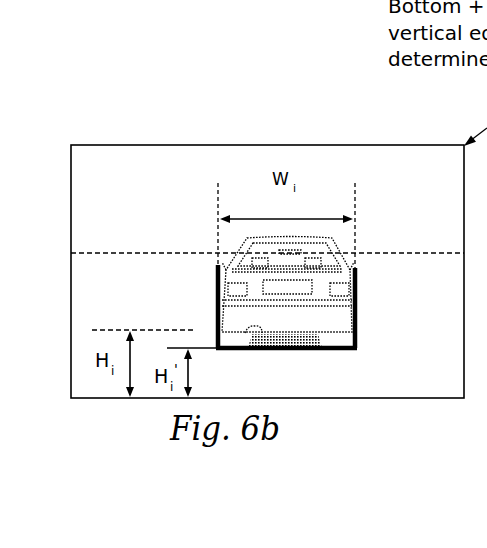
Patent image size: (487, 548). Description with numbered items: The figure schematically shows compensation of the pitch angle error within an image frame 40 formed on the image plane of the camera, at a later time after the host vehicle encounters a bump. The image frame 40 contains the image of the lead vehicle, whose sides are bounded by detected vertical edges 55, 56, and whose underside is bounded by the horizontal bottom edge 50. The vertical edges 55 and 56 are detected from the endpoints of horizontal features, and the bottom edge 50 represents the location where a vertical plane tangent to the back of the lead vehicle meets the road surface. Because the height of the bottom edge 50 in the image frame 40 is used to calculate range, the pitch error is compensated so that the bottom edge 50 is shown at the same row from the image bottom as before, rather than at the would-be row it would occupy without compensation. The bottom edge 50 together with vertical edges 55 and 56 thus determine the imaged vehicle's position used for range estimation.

The image frame 40 is at (178, 142).
The vertical edge 55 is at (216, 305).
The vertical edge 56 is at (358, 318).
The bottom edge 50 is at (325, 350).